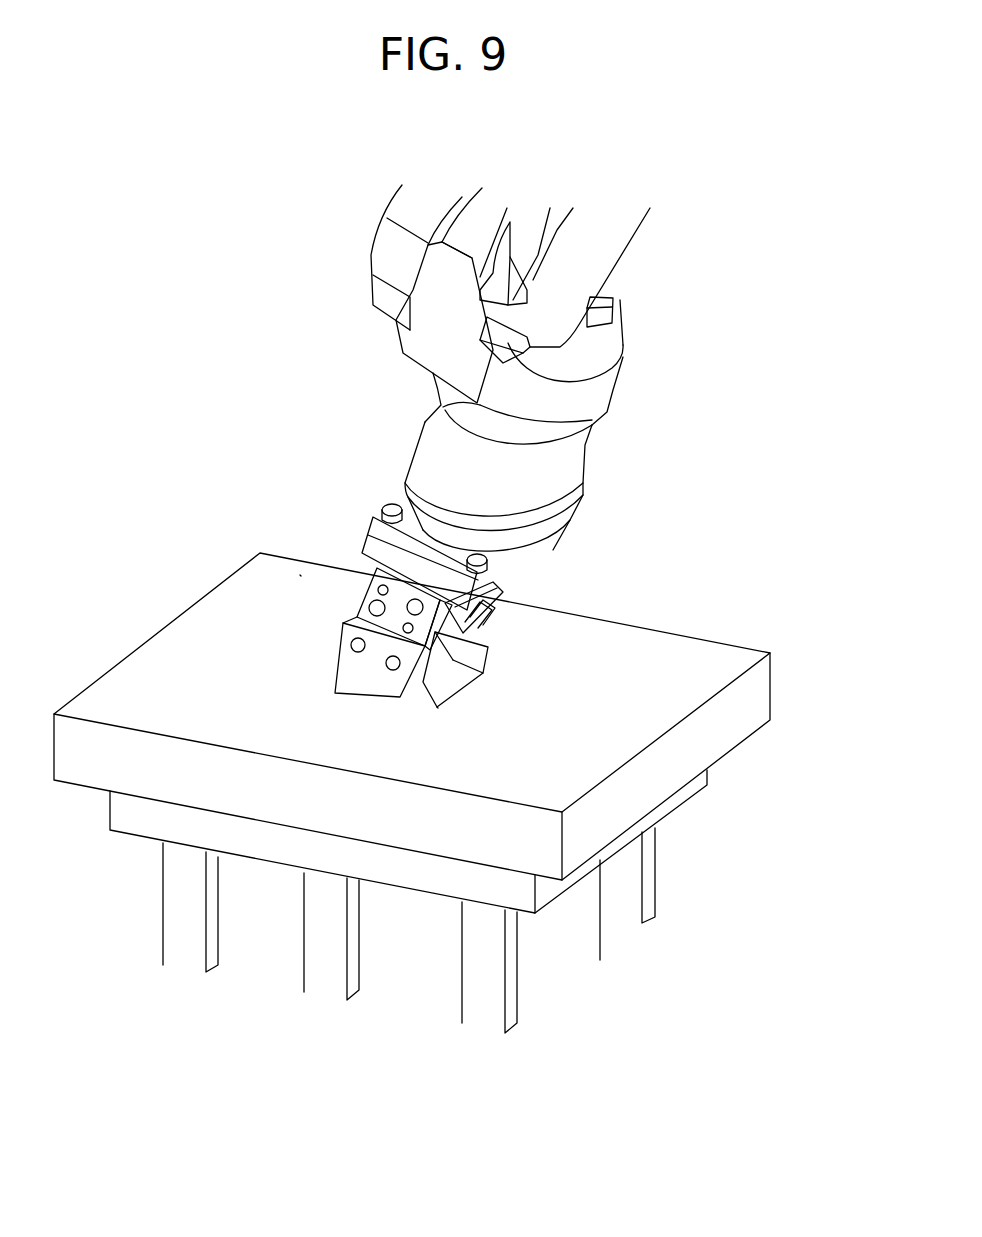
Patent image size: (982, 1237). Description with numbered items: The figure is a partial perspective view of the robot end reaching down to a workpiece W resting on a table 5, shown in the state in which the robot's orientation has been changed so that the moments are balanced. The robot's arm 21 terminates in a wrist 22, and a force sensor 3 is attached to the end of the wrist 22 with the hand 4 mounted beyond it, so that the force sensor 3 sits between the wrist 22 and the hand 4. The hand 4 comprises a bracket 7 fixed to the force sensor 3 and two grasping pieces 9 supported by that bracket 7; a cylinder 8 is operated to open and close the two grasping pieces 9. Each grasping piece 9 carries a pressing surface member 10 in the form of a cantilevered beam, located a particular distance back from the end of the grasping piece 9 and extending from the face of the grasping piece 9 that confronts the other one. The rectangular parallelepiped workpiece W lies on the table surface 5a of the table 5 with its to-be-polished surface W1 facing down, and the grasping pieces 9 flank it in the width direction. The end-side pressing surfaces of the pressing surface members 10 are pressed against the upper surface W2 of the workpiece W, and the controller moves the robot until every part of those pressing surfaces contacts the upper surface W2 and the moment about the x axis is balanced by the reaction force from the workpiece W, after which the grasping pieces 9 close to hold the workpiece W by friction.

The arm 21 is at (387, 255).
The wrist 22 is at (622, 429).
The force sensor 3 is at (560, 535).
The hand 4 is at (345, 600).
The table 5 is at (745, 740).
The table surface 5a is at (683, 675).
The bracket 7 is at (373, 588).
The cylinder 8 is at (497, 615).
The grasping piece 9 is at (353, 662).
The pressing surface member 10 is at (450, 660).
The workpiece W is at (465, 718).
The to-be-polished surface W1 is at (357, 693).
The upper surface W2 is at (458, 677).